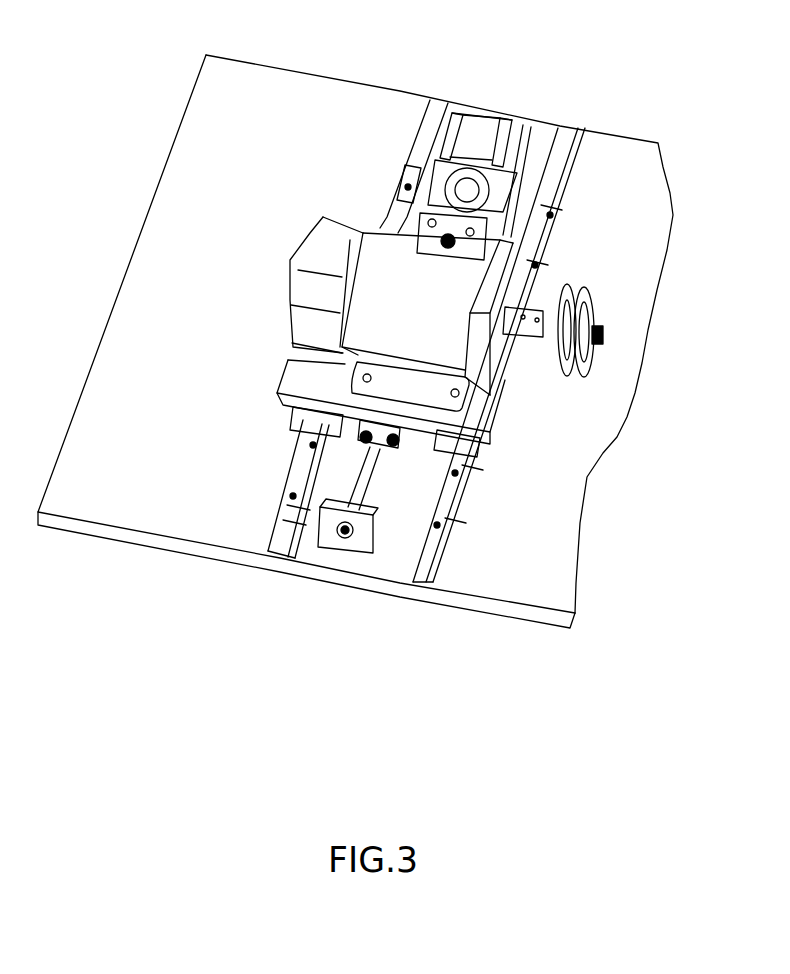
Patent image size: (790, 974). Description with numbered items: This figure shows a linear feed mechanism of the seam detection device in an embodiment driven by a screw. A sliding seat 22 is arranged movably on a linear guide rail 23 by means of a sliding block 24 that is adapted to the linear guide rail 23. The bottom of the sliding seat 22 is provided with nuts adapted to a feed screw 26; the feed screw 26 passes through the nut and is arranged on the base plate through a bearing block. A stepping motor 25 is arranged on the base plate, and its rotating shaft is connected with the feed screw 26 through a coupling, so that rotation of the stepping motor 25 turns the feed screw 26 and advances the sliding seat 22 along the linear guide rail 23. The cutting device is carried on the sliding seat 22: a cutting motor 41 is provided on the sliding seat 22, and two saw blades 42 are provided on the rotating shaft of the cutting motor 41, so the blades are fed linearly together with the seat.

The sliding seat 22 is at (303, 373).
The linear guide rail 23 is at (547, 231).
The sliding block 24 is at (303, 420).
The stepping motor 25 is at (478, 128).
The feed screw 26 is at (363, 476).
The cutting motor 41 is at (392, 278).
The saw blades 42 is at (560, 377).